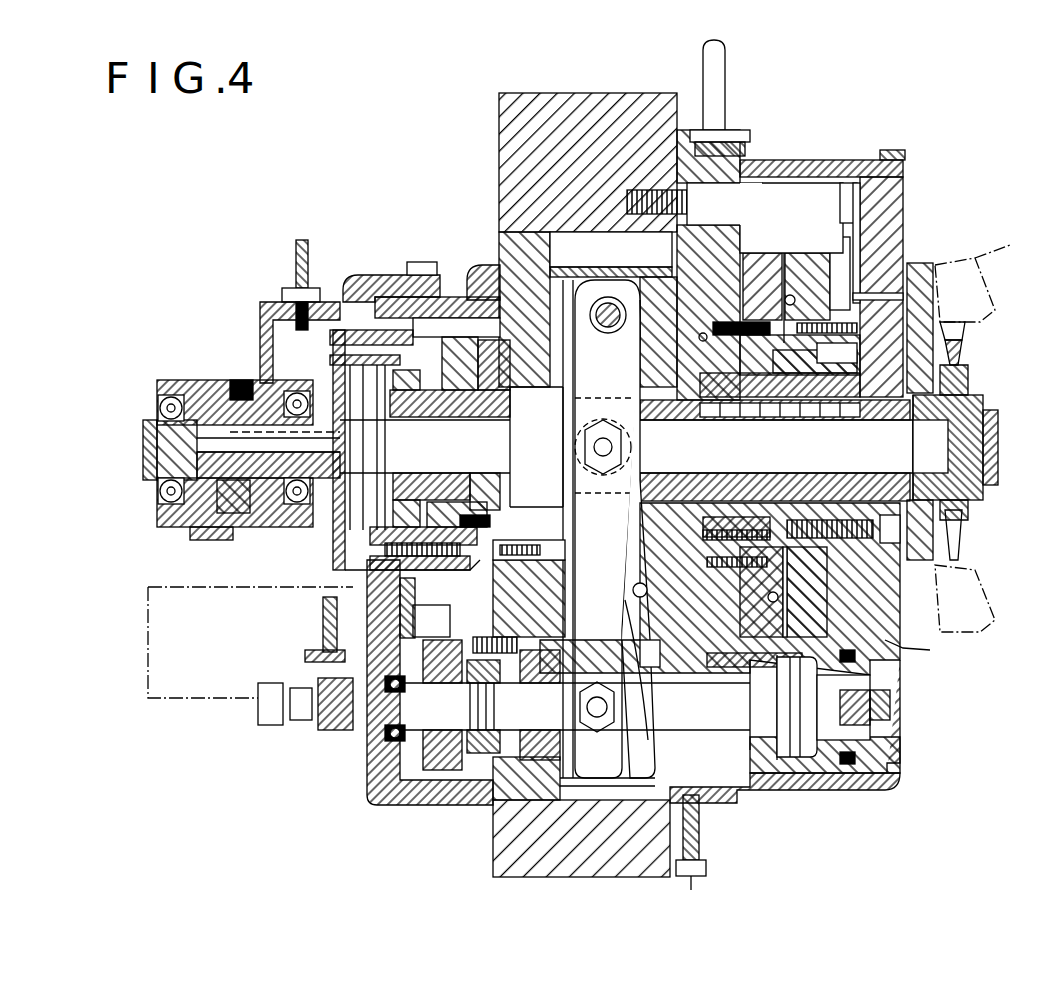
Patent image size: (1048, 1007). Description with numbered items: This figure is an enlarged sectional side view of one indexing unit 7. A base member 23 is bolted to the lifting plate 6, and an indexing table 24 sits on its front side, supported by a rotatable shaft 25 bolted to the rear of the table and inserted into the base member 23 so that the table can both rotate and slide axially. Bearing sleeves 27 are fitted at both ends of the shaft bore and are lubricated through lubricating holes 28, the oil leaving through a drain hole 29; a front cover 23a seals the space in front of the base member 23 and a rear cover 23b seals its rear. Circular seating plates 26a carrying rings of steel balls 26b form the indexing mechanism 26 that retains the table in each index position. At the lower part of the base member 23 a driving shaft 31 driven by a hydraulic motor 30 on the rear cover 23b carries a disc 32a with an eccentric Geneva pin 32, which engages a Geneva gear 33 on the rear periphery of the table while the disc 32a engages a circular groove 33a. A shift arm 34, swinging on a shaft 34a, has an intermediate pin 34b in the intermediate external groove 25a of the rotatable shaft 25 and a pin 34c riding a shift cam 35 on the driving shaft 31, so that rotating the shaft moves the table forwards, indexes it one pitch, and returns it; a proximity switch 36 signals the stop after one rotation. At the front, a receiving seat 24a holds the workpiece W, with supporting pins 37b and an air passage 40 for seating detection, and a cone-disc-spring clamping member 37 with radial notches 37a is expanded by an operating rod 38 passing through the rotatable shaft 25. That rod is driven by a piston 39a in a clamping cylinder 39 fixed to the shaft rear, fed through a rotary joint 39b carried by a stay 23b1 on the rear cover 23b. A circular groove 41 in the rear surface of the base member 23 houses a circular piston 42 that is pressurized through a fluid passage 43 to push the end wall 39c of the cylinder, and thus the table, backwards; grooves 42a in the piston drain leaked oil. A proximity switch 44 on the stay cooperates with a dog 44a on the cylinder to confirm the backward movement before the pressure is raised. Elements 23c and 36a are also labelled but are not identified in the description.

The lifting plate 6 is at (499, 118).
The indexing unit 7 is at (800, 160).
The base member 23 is at (722, 133).
The front cover 23a is at (868, 780).
The rear cover 23b is at (410, 805).
The stay 23b1 is at (370, 275).
The housing portion 23c is at (647, 590).
The indexing table 24 is at (893, 228).
The receiving seat 24a is at (950, 648).
The rotatable shaft 25 is at (790, 485).
The intermediate external groove 25a is at (541, 476).
The indexing mechanism 26 is at (788, 272).
The circular seating plate 26a is at (775, 262).
The steel balls 26b is at (785, 298).
The bearing sleeve 27 is at (742, 520).
The lubricating hole 28 is at (555, 370).
The drain hole 29 is at (715, 820).
The hydraulic motor 30 is at (195, 690).
The driving shaft 31 is at (683, 688).
The Geneva pin 32 is at (870, 745).
The disc 32a is at (823, 740).
The Geneva gear 33 is at (850, 680).
The circular groove 33a is at (857, 655).
The shift arm 34 is at (624, 551).
The shaft 34a is at (606, 312).
The intermediate pin 34b is at (540, 439).
The pin 34c is at (615, 790).
The shift cam 35 is at (630, 705).
The proximity switch 36 is at (323, 630).
The coupling 36a is at (320, 690).
The clamping member 37 is at (965, 378).
The radially extending notches 37a is at (965, 348).
The supporting pins 37b is at (965, 322).
The operating rod 38 is at (876, 458).
The clamping cylinder 39 is at (313, 530).
The piston 39a is at (425, 446).
The rotary joint 39b is at (200, 385).
The end wall 39c is at (490, 575).
The air passage 40 is at (915, 275).
The circular groove 41 is at (529, 598).
The circular piston 42 is at (490, 598).
The grooves 42a is at (476, 517).
The fluid passage 43 is at (621, 539).
The proximity switch 44 is at (295, 280).
The dog 44a is at (262, 330).
The workpiece W is at (994, 274).